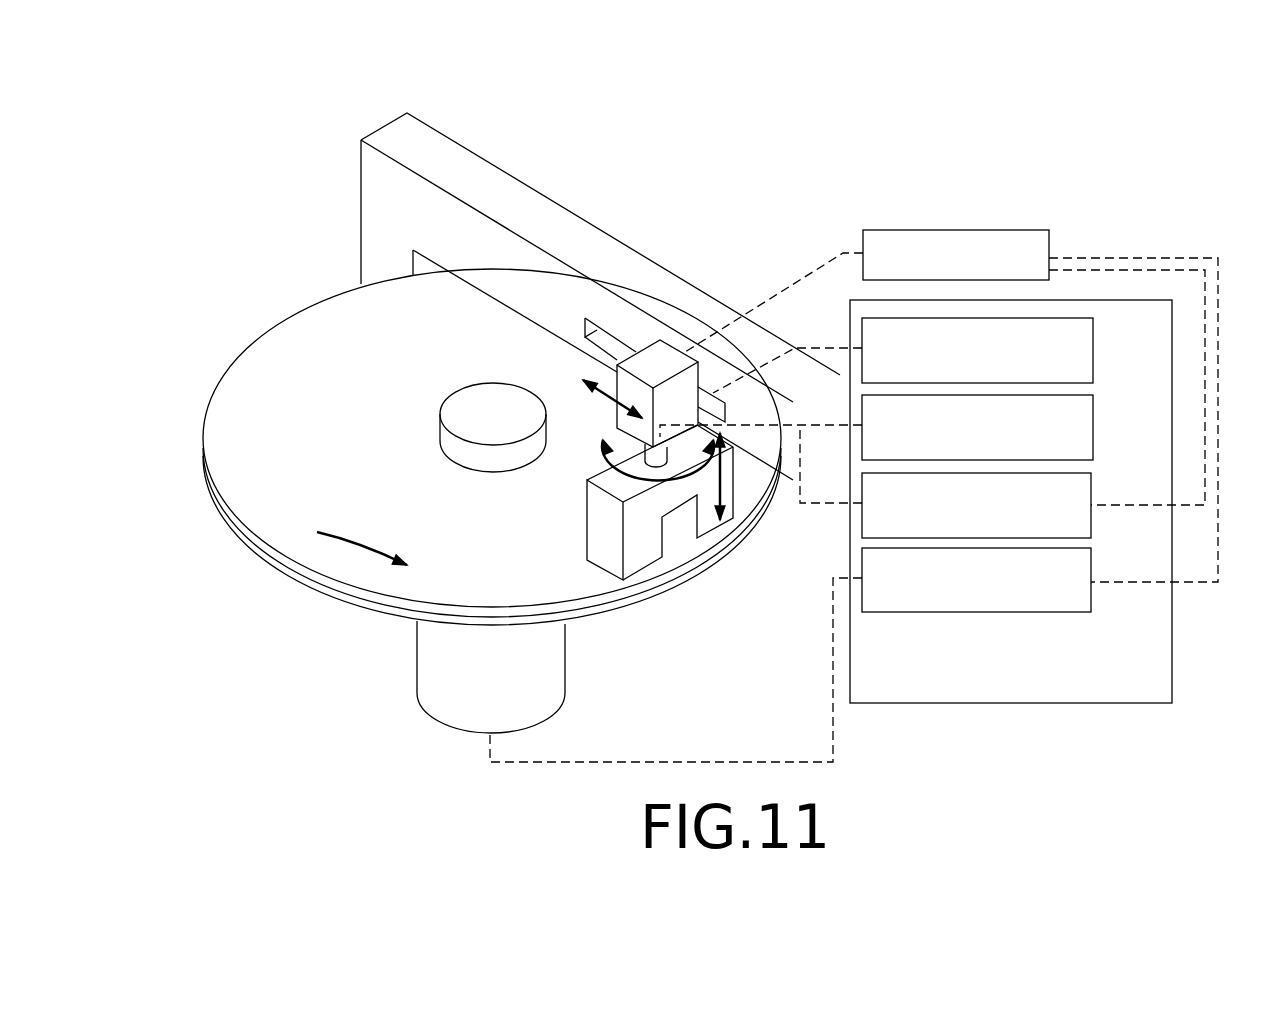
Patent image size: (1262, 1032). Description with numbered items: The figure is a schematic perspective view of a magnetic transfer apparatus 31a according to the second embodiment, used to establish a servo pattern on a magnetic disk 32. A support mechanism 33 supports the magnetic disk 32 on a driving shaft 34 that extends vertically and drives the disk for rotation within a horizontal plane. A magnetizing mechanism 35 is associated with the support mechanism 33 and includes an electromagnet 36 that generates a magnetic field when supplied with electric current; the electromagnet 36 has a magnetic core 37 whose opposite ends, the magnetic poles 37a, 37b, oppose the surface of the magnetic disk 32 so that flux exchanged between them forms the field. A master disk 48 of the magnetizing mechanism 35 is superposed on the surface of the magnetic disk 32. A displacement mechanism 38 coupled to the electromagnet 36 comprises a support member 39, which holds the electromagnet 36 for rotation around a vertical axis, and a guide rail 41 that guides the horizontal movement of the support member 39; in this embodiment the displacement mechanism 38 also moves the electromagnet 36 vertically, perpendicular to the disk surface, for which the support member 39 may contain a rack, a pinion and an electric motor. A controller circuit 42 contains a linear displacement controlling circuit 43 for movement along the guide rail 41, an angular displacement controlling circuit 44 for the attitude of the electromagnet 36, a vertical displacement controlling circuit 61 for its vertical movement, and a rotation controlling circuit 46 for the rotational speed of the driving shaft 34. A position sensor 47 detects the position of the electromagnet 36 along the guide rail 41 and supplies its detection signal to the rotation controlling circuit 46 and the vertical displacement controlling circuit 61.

The magnetic transfer apparatus 31a is at (328, 158).
The magnetic disk 32 is at (310, 583).
The support mechanism 33 is at (332, 645).
The driving shaft 34 is at (418, 656).
The magnetizing mechanism 35 is at (470, 497).
The electromagnet 36 is at (606, 474).
The magnetic core 37 is at (592, 523).
The magnetic pole 37a is at (603, 570).
The magnetic pole 37b is at (717, 520).
The displacement mechanism 38 is at (717, 282).
The support member 39 is at (612, 378).
The guide rail 41 is at (493, 297).
The controller circuit 42 is at (1172, 655).
The linear displacement controlling circuit 43 is at (1093, 335).
The angular displacement controlling circuit 44 is at (1093, 415).
The rotation controlling circuit 46 is at (1091, 603).
The position sensor 47 is at (1050, 243).
The master disk 48 is at (310, 313).
The vertical displacement controlling circuit 61 is at (1091, 528).